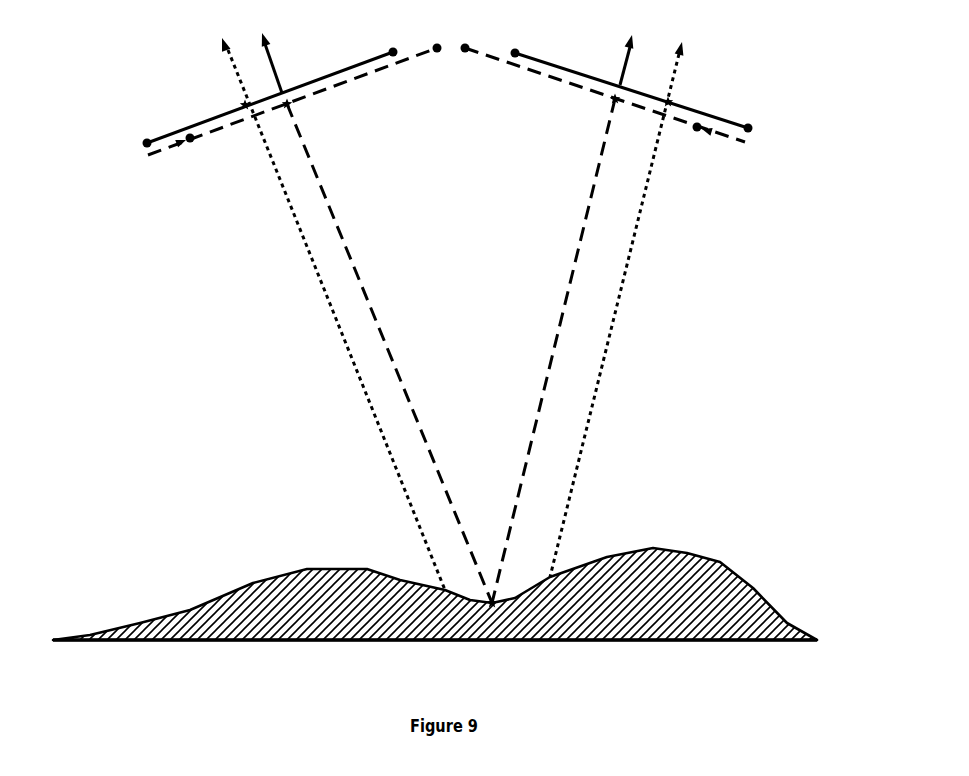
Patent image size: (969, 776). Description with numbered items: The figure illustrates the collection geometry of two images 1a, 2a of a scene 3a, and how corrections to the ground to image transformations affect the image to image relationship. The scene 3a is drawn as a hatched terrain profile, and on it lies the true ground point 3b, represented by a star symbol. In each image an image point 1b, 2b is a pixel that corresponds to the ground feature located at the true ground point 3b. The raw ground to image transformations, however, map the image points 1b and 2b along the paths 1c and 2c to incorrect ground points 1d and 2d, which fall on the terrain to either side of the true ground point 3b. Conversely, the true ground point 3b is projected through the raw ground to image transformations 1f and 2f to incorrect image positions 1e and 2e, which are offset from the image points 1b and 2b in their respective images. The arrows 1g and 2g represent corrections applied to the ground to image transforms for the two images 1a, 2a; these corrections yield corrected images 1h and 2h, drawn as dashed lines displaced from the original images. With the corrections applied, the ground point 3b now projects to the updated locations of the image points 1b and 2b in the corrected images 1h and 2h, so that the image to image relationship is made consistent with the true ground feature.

The first image 1a is at (190, 124).
The image point in first image 1b is at (240, 102).
The raw ground to image transformation mapping of first image 1c is at (305, 250).
The incorrect ground point for first image 1d is at (443, 590).
The incorrect image position in first image 1e is at (283, 85).
The raw ground to image transformation of first image 1f is at (363, 272).
The correction to first ground to image transform 1g is at (165, 162).
The corrected first image 1h is at (370, 77).
The second image 2a is at (713, 110).
The image point in second image 2b is at (675, 92).
The raw ground to image transformation mapping of second image 2c is at (628, 292).
The incorrect ground point for second image 2d is at (563, 565).
The incorrect image position in second image 2e is at (615, 85).
The raw ground to image transformation of second image 2f is at (580, 243).
The correction to second ground to image transform 2g is at (718, 137).
The corrected second image 2h is at (555, 82).
The scene 3a is at (263, 575).
The true ground point 3b is at (492, 590).